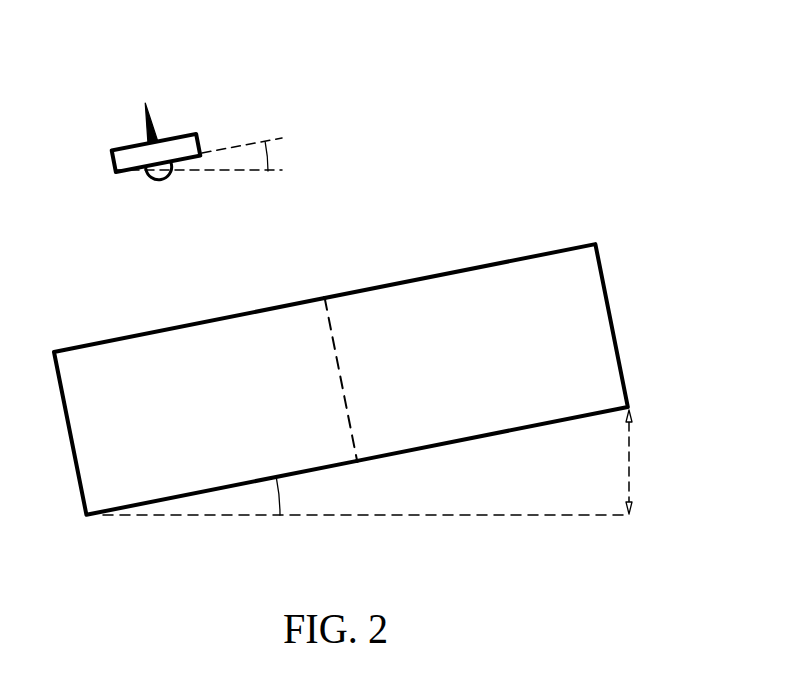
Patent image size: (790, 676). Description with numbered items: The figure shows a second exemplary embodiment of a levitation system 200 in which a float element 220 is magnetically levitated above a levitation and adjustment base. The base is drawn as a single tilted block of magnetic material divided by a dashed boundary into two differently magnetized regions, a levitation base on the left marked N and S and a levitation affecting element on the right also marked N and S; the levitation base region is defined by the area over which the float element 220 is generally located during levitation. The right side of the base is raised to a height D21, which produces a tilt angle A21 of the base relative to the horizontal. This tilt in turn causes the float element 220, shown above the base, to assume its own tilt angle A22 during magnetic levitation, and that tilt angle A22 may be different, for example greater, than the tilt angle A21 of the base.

The levitation system 200 is at (522, 102).
The float element 220 is at (128, 143).
The tilt angle of the levitation and adjustment base A21 is at (283, 495).
The tilt angle of the float element A22 is at (270, 152).
The height D21 is at (630, 458).